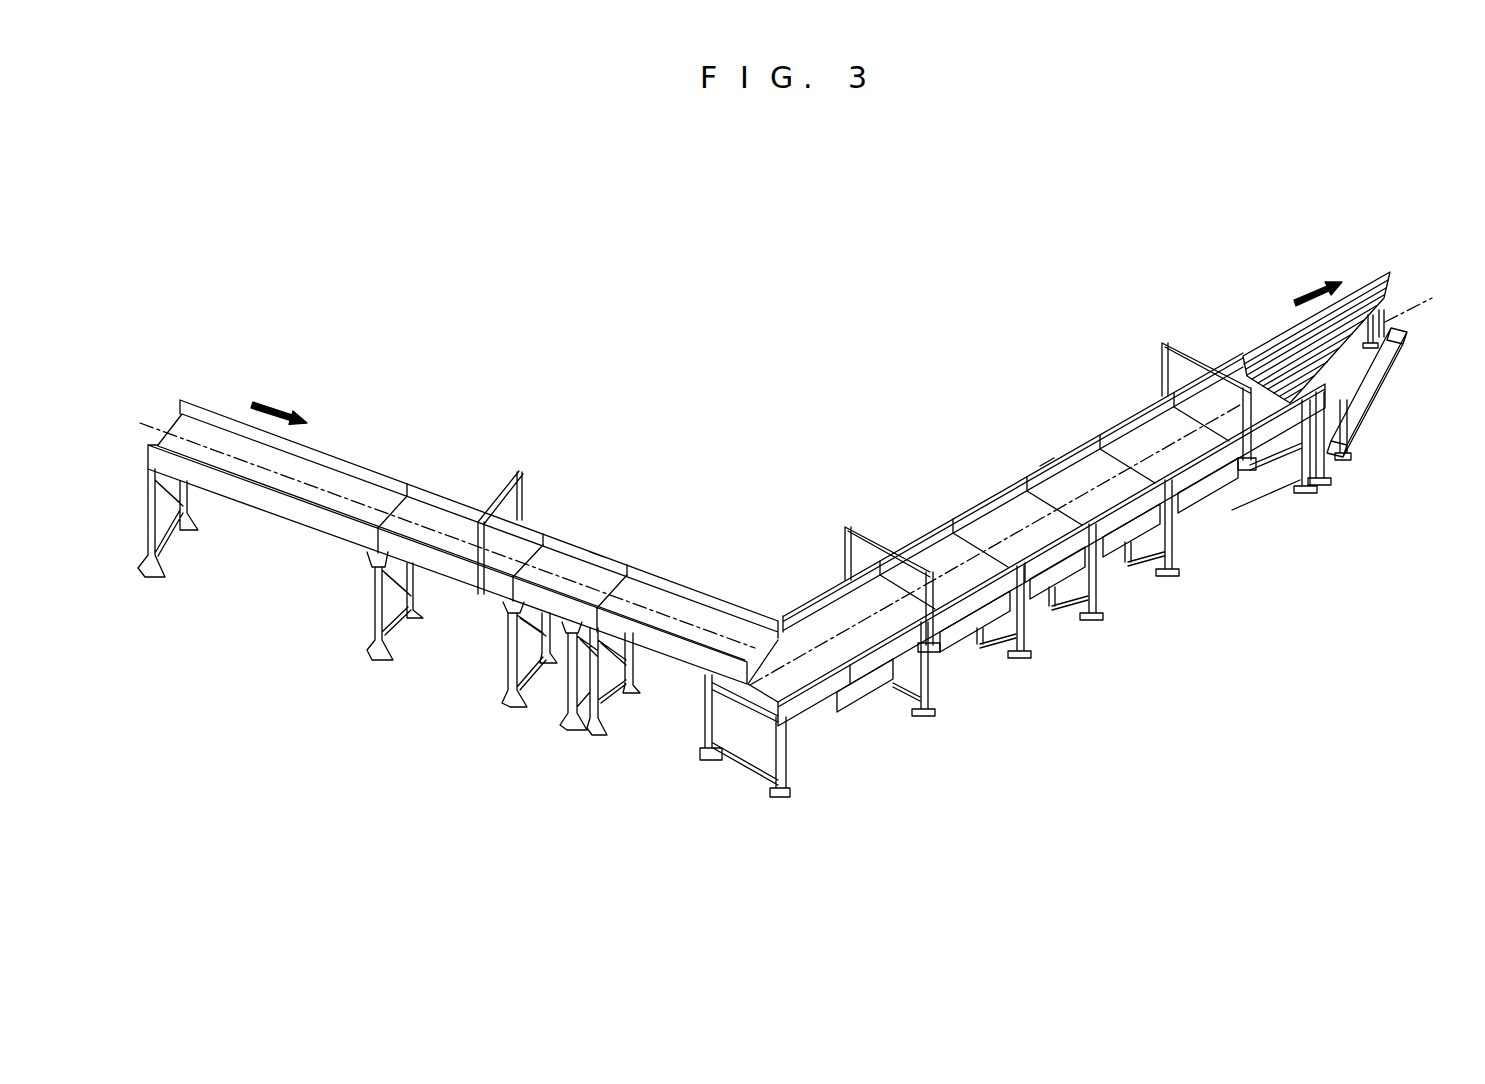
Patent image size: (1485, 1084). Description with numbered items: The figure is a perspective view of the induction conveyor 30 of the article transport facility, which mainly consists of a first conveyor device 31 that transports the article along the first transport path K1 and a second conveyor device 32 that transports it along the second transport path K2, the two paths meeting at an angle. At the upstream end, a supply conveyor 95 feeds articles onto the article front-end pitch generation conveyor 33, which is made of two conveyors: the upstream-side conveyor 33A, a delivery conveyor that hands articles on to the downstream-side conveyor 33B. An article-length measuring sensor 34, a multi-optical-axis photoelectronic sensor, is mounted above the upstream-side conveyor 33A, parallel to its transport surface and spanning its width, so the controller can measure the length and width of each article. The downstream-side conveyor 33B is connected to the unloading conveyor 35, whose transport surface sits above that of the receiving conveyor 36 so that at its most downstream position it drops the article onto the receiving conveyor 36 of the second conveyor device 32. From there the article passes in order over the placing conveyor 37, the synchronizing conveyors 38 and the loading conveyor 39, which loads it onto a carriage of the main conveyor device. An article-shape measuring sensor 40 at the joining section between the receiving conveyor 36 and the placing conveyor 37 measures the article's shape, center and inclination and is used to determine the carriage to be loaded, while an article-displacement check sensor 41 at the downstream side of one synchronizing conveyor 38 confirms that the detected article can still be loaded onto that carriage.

The induction conveyor 30 is at (855, 427).
The first conveyor device 31 is at (714, 536).
The second conveyor device 32 is at (869, 504).
The article front-end pitch generation conveyor 33 is at (560, 772).
The upstream-side conveyor 33A is at (447, 567).
The downstream-side conveyor 33B is at (553, 605).
The article-length measuring sensor 34 is at (482, 505).
The unloading conveyor 35 is at (682, 656).
The receiving conveyor 36 is at (845, 683).
The placing conveyor 37 is at (957, 618).
The synchronizing conveyors 38 is at (1283, 432).
The loading conveyor 39 is at (1283, 355).
The article-shape measuring sensor 40 is at (891, 527).
The article-displacement check sensor 41 is at (1165, 343).
The supply conveyor 95 is at (318, 450).
The first transport path K1 is at (596, 552).
The second transport path K2 is at (1048, 462).